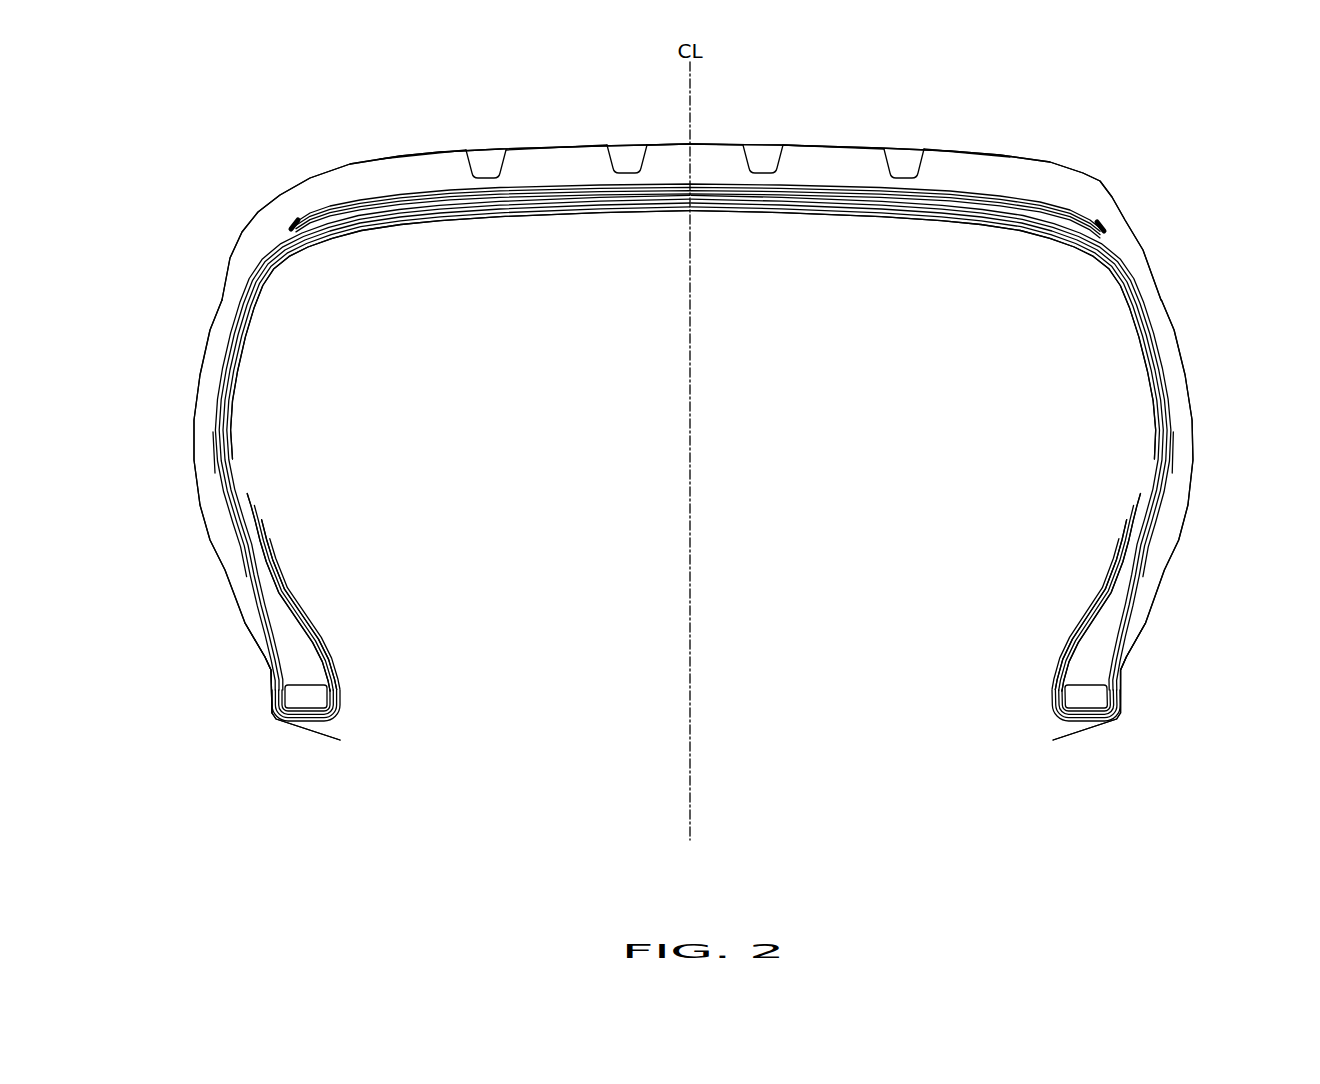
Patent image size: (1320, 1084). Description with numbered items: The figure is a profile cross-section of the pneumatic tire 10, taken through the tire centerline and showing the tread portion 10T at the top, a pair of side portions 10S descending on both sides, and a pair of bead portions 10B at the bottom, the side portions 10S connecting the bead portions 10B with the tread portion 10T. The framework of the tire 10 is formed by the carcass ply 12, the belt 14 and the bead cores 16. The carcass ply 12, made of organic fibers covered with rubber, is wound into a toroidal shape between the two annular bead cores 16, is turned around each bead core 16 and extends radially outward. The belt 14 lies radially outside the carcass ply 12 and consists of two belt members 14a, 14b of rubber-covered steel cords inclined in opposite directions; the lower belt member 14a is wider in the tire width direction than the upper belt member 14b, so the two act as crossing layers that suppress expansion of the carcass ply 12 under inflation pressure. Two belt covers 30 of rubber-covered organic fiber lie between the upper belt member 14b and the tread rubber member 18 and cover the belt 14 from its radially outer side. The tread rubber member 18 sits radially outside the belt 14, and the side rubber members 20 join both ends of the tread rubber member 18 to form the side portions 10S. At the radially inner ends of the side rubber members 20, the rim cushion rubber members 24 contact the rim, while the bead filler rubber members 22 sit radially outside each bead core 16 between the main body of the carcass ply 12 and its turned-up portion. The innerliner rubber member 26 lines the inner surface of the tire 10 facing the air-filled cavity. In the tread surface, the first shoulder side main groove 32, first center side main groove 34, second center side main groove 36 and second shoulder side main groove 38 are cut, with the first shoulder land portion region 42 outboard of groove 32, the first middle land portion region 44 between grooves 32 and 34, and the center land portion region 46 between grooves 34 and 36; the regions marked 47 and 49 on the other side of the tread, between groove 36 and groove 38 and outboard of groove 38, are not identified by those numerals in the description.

The tire 10 is at (941, 92).
The tread portion 10T is at (1092, 171).
The side portions 10S is at (194, 484).
The bead portions 10B is at (276, 728).
The carcass ply 12 is at (232, 411).
The belt 14 is at (763, 211).
The belt member 14a is at (1085, 220).
The belt member 14b is at (1068, 208).
The bead core 16 is at (313, 708).
The tread rubber member 18 is at (718, 162).
The side rubber members 20 is at (237, 568).
The bead filler rubber members 22 is at (303, 645).
The rim cushion rubber members 24 is at (270, 656).
The innerliner rubber member 26 is at (552, 214).
The belt covers 30 is at (1045, 203).
The first shoulder side main groove 32 is at (487, 165).
The first center side main groove 34 is at (627, 158).
The second center side main groove 36 is at (764, 158).
The second shoulder side main groove 38 is at (903, 165).
The first shoulder land portion region 42 is at (410, 162).
The first middle land portion region 44 is at (557, 163).
The center land portion region 46 is at (664, 162).
The center land portion 47 is at (818, 162).
The intermediate land portion 49 is at (972, 165).